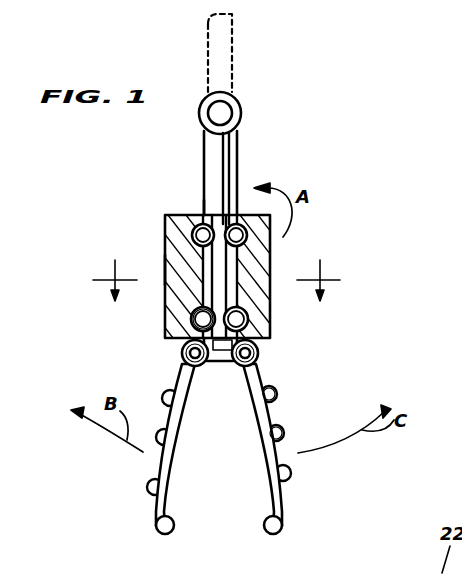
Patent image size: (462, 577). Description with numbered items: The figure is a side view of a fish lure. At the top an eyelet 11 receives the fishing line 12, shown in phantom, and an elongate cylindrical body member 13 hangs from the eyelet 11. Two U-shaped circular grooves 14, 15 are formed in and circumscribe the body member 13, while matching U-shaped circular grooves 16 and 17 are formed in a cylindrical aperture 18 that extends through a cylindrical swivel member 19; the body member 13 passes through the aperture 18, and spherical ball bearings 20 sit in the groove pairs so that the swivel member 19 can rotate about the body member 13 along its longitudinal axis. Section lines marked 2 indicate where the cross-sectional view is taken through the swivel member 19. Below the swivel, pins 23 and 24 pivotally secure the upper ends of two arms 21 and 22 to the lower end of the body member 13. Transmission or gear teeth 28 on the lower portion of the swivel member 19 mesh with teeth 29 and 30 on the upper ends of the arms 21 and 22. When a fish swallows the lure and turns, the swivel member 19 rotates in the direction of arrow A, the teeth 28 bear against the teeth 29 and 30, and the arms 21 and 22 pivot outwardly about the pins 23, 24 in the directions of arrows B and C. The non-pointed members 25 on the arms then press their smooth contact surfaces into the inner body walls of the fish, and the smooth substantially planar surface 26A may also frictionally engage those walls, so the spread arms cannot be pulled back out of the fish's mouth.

The section line 2- 2 is at (216, 285).
The eyelet 11 is at (240, 113).
The fishing line 12 is at (231, 63).
The elongate cylindrical body member 13 is at (198, 155).
The U-shaped circular groove 14 is at (204, 212).
The U-shaped circular groove 15 is at (172, 268).
The U-shaped circular groove 16 is at (181, 217).
The U-shaped circular groove 17 is at (191, 322).
The cylindrical aperture 18 is at (248, 215).
The cylindrical swivel member 19 is at (158, 217).
The spherical ball bearings 20 is at (193, 237).
The arm 21 is at (136, 487).
The arm 22 is at (302, 517).
The pin 23 is at (184, 365).
The pin 24 is at (262, 361).
The members 25 is at (277, 393).
The smooth substantially planar surface 26A is at (282, 452).
The transmission or gear teeth 28 is at (191, 319).
The teeth 29 is at (182, 352).
The teeth 30 is at (258, 348).